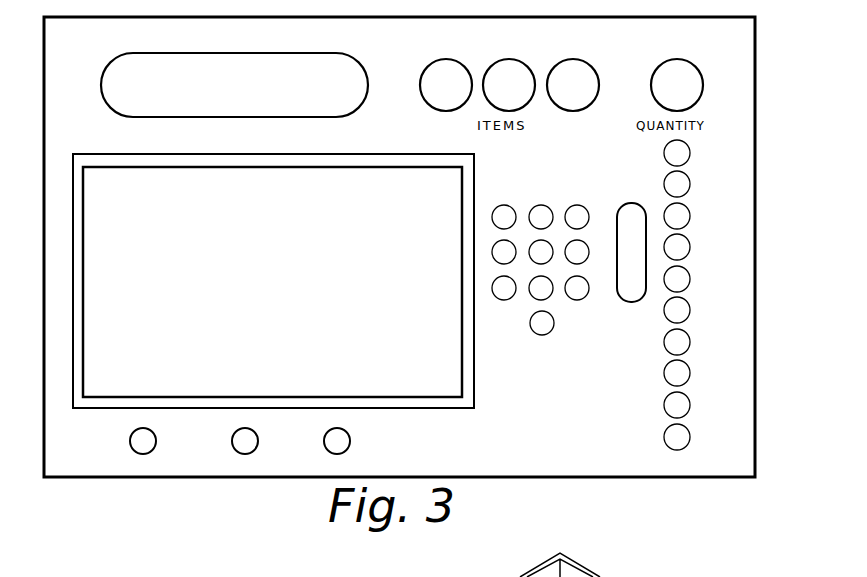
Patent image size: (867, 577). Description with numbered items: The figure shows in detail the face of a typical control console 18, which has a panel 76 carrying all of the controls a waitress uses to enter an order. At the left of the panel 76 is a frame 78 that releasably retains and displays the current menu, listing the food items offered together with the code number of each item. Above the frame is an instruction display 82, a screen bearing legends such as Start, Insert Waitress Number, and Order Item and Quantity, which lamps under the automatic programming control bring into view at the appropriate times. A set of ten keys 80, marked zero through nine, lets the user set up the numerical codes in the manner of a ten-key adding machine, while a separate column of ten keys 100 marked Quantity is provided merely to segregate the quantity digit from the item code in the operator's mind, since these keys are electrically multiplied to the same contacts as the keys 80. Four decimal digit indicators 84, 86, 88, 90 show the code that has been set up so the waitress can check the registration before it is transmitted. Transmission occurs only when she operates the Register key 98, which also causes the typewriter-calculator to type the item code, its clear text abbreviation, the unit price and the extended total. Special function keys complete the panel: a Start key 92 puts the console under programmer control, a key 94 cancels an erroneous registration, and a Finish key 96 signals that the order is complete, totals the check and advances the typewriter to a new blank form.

The control console 18 is at (770, 124).
The panel 76 is at (596, 410).
The frame 78 is at (86, 322).
The set of ten keys 80 is at (553, 200).
The instruction display 82 is at (356, 70).
The decimal digit indicator 84 is at (450, 62).
The decimal digit indicator 86 is at (510, 62).
The decimal digit indicator 88 is at (575, 62).
The decimal digit indicator 90 is at (679, 62).
The Start key 92 is at (130, 437).
The cancel key 94 is at (232, 436).
The Finish key 96 is at (330, 434).
The Register key 98 is at (633, 205).
The separate set of ten keys 100 is at (692, 216).